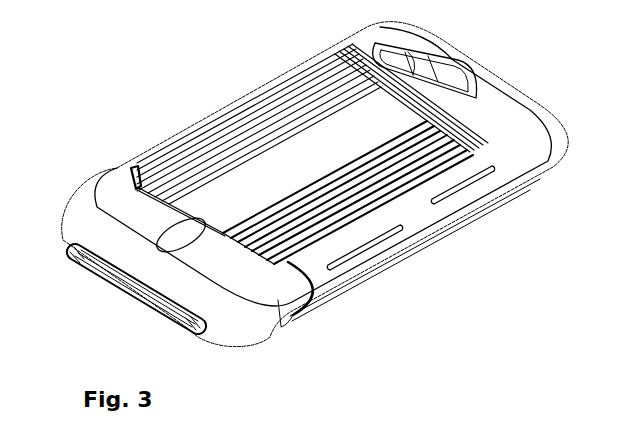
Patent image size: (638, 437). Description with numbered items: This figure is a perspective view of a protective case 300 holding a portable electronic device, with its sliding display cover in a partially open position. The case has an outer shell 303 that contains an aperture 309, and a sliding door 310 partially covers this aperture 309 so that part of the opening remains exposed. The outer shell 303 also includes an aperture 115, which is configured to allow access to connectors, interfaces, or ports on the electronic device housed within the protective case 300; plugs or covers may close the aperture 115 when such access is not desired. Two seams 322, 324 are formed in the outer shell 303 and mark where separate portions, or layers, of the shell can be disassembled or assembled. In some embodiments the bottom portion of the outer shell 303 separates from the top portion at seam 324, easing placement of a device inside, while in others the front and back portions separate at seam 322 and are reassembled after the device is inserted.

The protective case 300 is at (88, 82).
The outer shell 303 is at (490, 87).
The aperture 309 is at (307, 100).
The sliding door 310 is at (477, 160).
The seam 322 is at (325, 298).
The seam 324 is at (306, 296).
The aperture 115 is at (113, 287).